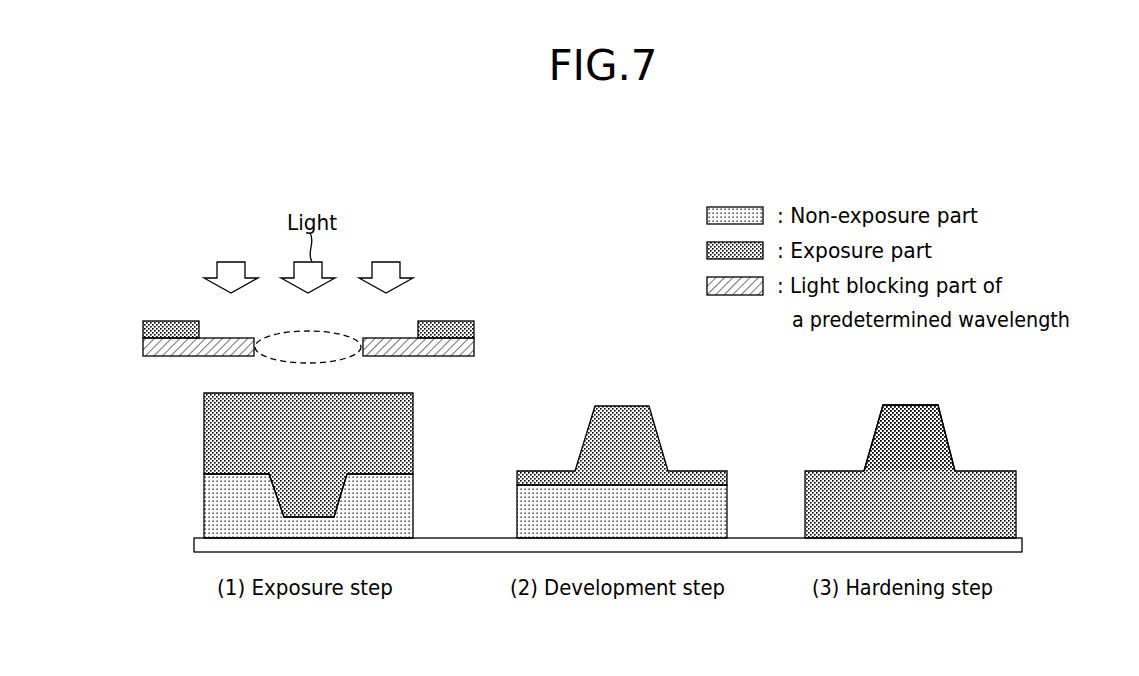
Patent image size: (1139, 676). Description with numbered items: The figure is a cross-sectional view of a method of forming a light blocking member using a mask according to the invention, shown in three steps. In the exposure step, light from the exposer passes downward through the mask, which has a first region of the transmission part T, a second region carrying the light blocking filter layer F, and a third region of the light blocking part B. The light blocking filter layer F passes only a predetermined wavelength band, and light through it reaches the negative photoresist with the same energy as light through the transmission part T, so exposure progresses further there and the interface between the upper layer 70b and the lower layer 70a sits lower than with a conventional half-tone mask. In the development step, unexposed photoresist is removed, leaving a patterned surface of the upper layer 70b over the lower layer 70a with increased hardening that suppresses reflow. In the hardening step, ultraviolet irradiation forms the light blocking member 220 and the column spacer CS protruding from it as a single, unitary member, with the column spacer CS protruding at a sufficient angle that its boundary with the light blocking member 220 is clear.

The lower layer 70a is at (398, 500).
The upper layer 70b is at (398, 432).
The light blocking member 220 is at (992, 498).
The column spacer CS is at (933, 432).
The light blocking part B is at (160, 321).
The light blocking filter layer F is at (160, 356).
The transmission part T is at (340, 333).